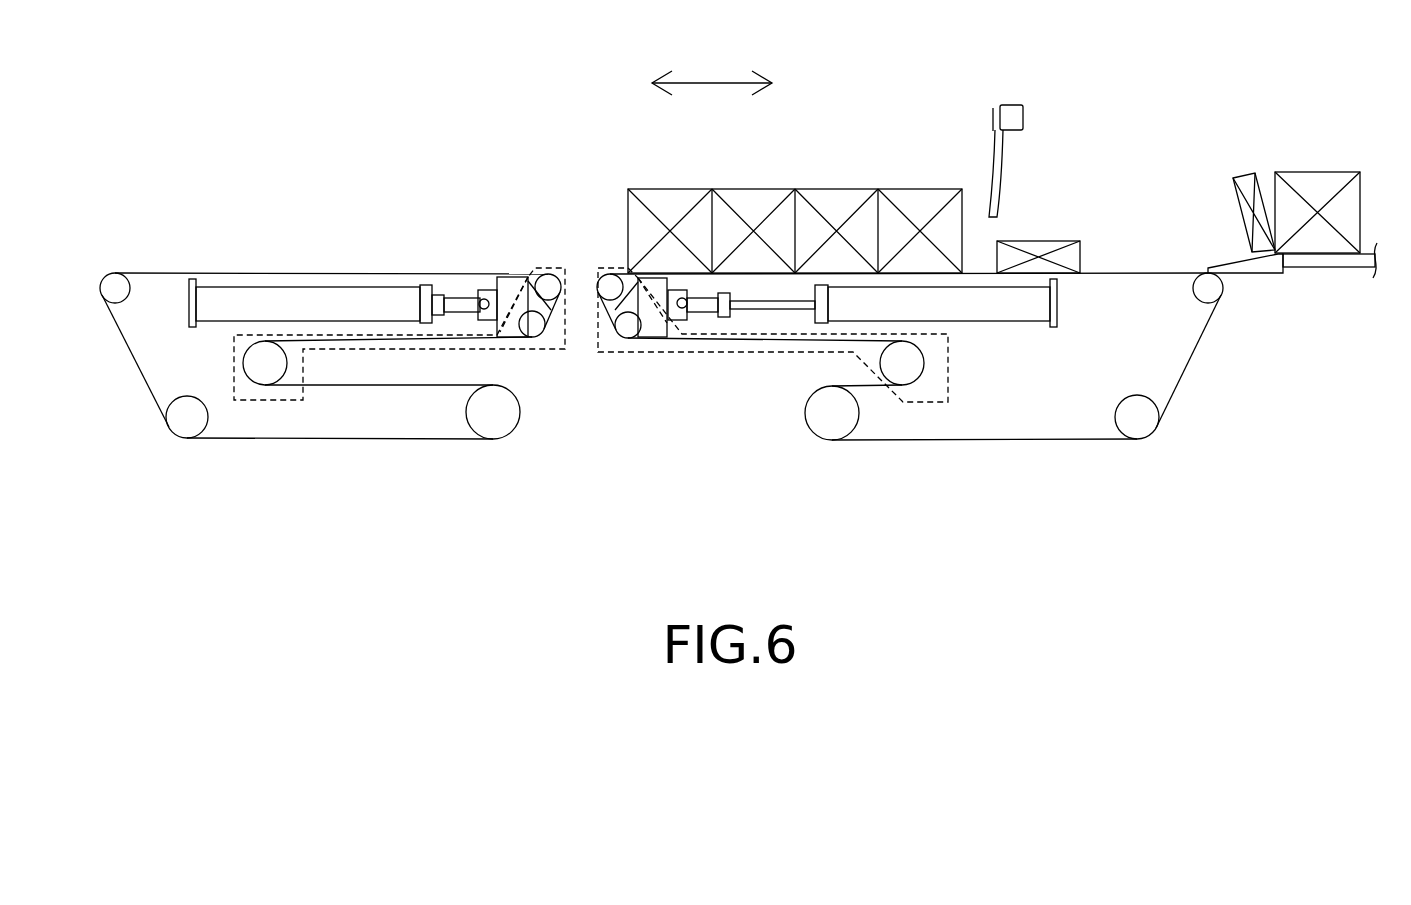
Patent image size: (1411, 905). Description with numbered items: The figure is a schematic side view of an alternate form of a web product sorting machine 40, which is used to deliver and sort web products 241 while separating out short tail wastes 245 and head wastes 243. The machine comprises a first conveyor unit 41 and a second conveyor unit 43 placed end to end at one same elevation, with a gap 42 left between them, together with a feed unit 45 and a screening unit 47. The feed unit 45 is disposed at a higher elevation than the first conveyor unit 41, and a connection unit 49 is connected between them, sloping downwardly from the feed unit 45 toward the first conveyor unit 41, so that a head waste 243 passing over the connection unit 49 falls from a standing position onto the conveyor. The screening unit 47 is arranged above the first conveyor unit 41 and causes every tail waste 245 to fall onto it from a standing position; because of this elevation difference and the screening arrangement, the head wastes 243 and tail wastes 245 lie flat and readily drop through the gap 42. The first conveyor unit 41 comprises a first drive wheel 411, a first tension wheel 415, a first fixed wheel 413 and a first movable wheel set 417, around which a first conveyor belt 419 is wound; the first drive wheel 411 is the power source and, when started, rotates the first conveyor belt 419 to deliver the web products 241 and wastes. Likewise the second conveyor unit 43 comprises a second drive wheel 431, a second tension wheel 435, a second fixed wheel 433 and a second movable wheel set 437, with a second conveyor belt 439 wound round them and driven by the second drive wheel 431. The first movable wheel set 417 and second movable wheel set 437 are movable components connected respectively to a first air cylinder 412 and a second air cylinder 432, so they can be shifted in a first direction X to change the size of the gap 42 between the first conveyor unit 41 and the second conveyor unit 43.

The web product sorting machine 40 is at (278, 85).
The first conveyor unit 41 is at (1140, 262).
The gap 42 is at (578, 353).
The second conveyor unit 43 is at (208, 262).
The feed unit 45 is at (1323, 267).
The screening unit 47 is at (1014, 100).
The connection unit 49 is at (1252, 273).
The web products 241 is at (660, 193).
The head wastes 243 is at (1255, 173).
The tail wastes 245 is at (1053, 240).
The first drive wheel 411 is at (832, 433).
The first air cylinder 412 is at (1005, 318).
The first fixed wheel 413 is at (1212, 298).
The first tension wheel 415 is at (1137, 433).
The first movable wheel set 417 is at (717, 348).
The first conveyor belt 419 is at (960, 440).
The second drive wheel 431 is at (497, 433).
The second air cylinder 432 is at (218, 318).
The second fixed wheel 433 is at (112, 281).
The second tension wheel 435 is at (187, 438).
The second movable wheel set 437 is at (547, 270).
The second conveyor belt 439 is at (340, 440).